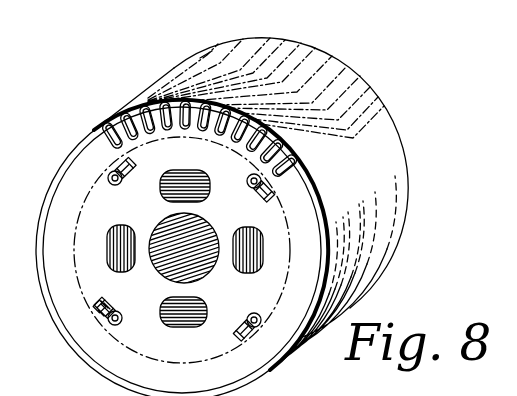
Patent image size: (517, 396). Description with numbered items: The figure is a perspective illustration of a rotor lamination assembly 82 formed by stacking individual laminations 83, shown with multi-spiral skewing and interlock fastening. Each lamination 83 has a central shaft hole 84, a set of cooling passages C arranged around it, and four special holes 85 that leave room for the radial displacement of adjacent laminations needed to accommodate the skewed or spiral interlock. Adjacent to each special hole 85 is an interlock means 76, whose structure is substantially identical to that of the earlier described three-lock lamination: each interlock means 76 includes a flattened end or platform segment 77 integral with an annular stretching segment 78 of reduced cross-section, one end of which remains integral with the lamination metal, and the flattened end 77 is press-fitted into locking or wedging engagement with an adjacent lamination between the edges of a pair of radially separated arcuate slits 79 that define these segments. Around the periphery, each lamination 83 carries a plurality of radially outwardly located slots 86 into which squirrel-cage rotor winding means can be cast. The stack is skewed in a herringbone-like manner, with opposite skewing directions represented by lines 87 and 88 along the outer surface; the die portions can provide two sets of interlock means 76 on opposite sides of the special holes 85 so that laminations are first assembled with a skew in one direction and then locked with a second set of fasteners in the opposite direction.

The rotor lamination assembly 82 is at (53, 182).
The laminations 83 is at (284, 342).
The shaft hole 84 is at (210, 224).
The special holes 85 is at (118, 184).
The slots 86 is at (125, 113).
The skewing 87 is at (183, 85).
The skewing 88 is at (216, 50).
The interlock means 76 is at (133, 164).
The flattened end segment 77 is at (113, 308).
The stretching segment 78 is at (97, 305).
The slits 79 is at (107, 305).
The cooling passages C is at (190, 171).